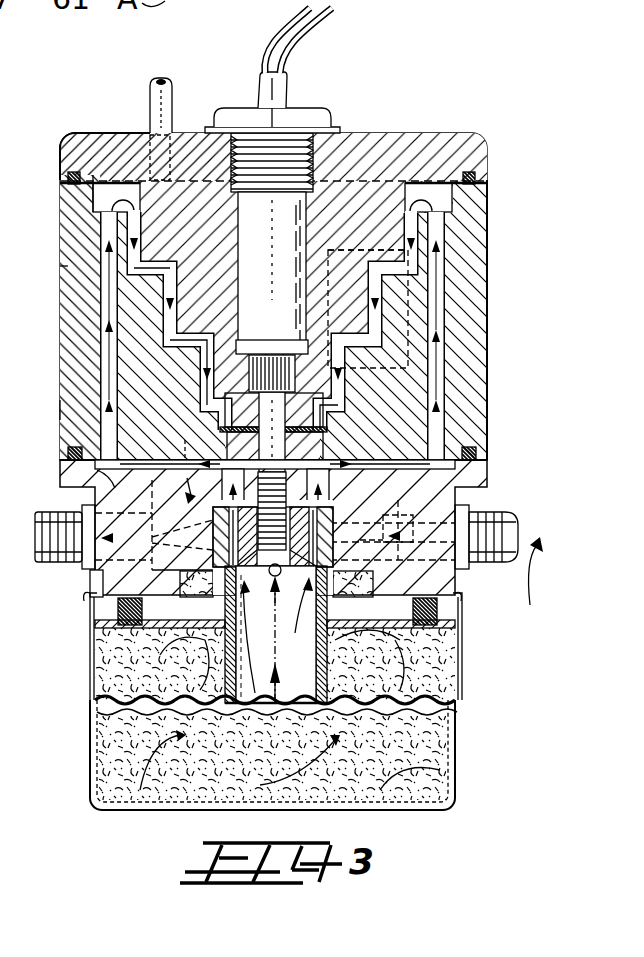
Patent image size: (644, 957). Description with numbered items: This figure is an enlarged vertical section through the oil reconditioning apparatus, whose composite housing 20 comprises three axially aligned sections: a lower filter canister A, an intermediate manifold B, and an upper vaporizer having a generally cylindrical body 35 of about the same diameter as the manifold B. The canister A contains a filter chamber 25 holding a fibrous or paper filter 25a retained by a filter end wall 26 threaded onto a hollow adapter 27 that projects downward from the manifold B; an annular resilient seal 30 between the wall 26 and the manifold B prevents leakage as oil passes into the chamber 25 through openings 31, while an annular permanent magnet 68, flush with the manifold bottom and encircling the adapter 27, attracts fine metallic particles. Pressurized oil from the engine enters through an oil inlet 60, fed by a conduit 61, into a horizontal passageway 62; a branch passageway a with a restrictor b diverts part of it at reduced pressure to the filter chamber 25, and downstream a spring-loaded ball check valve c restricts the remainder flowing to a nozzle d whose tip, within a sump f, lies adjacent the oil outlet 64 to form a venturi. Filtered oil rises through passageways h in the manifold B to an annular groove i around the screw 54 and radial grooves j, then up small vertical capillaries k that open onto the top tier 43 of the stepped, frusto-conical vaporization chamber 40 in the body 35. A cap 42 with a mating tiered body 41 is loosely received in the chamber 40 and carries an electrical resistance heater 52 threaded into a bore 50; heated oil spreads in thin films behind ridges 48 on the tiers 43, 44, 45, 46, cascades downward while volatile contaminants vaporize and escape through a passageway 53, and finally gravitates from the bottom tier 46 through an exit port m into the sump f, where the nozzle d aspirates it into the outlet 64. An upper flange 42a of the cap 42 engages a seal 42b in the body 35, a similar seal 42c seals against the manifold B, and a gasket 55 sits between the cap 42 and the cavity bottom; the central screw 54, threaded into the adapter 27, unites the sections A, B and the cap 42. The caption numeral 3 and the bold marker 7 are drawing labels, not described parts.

The composite housing 20 is at (193, 125).
The vaporization chamber closure member or cap 42 is at (355, 132).
The upper flange portion 42a is at (78, 146).
The annular resilient seal 42b is at (70, 182).
The annular resilient seal 42c is at (476, 452).
The top tier 43 is at (100, 198).
The intermediate tier 44 is at (140, 252).
The intermediate tier 45 is at (175, 350).
The bottom tier 46 is at (210, 405).
The inner peripheral projecting ridge or shoulder 48 is at (128, 212).
The threaded cavity or bore 50 is at (238, 236).
The electrical resistance heater 52 is at (298, 196).
The passageway 53 is at (150, 122).
The screw 54 is at (300, 440).
The gasket 55 is at (335, 412).
The tiered frusto-conical body 41 is at (360, 244).
The vaporization chamber 40 is at (387, 318).
The vaporizer body 35 is at (462, 308).
The section line 7 is at (425, 290).
The oil inlet 60 is at (518, 528).
The horizontal passageway 62 is at (392, 506).
The oil outlet 64 is at (50, 563).
The conduit or pipe 61 is at (30, 409).
The annular permanent magnet 68 is at (273, 587).
The annular resilient seal 30 is at (100, 614).
The filter end wall or filter retaining plate 26 is at (100, 652).
The hollow adapter 27 is at (391, 664).
The openings 31 is at (199, 665).
The pad 3 is at (413, 659).
The filter chamber 25 is at (165, 790).
The filter 25a is at (104, 736).
The lower section / filter canister A is at (90, 770).
The intermediate section / manifold B is at (60, 487).
The spring-loaded ball check valve c is at (60, 267).
The passageways or capillaries k is at (100, 314).
The exit port or opening m is at (185, 440).
The annular passageway-defining groove i is at (258, 446).
The passageways h is at (285, 488).
The radially extending passageway-defining grooves j is at (237, 488).
The branch passageway a is at (374, 559).
The restriction valve member or restrictor b is at (370, 583).
The nozzle d is at (182, 583).
The oil collecting chamber or sump area f is at (118, 583).